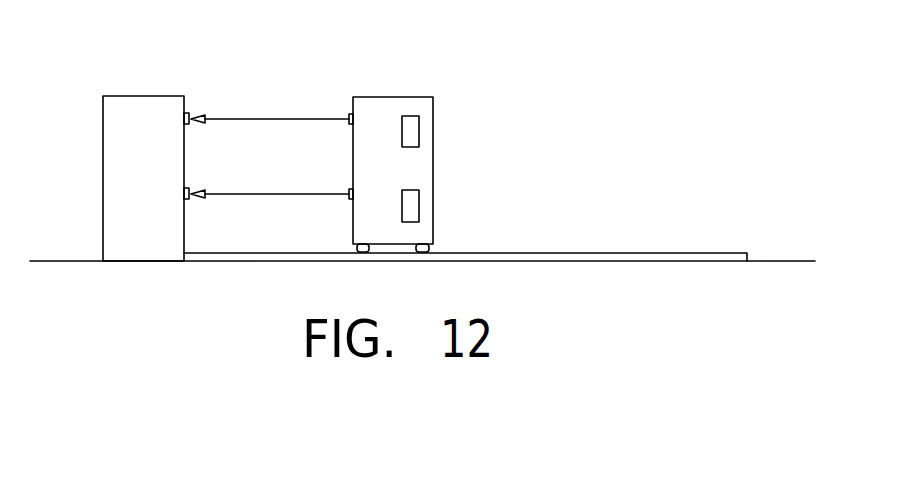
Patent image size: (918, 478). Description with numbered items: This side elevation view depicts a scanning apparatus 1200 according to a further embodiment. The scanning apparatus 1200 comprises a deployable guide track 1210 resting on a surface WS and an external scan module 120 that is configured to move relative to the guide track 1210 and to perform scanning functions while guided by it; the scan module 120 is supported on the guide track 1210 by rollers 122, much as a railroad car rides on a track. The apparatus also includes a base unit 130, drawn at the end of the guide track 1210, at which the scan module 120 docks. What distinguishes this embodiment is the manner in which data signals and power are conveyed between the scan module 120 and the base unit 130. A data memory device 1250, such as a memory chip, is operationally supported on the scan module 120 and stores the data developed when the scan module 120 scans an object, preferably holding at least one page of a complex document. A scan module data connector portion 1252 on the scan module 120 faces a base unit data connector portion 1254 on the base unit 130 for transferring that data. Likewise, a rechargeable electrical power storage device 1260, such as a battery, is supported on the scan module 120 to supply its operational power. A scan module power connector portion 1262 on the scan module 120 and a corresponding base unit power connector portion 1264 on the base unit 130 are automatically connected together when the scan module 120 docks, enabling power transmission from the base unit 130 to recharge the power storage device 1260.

The wafer stage / work surface WS is at (776, 260).
The deployable guide track 1210 is at (583, 254).
The base unit 130 is at (143, 108).
The scan module 120 is at (384, 108).
The rollers 122 is at (423, 253).
The data memory device 1250 is at (420, 130).
The rechargeable electrical power storage device 1260 is at (420, 204).
The base unit data connector portion 1254 is at (190, 112).
The base unit power connector portion 1264 is at (190, 187).
The scan module data connector portion 1252 is at (349, 124).
The scan module power connector portion 1262 is at (349, 199).
The scanning apparatus 1200 is at (573, 121).